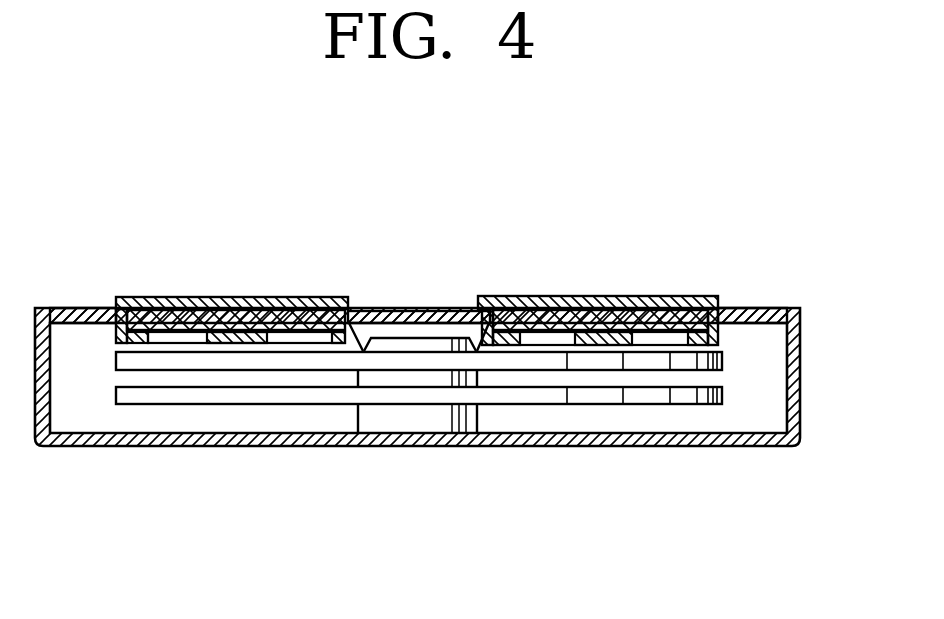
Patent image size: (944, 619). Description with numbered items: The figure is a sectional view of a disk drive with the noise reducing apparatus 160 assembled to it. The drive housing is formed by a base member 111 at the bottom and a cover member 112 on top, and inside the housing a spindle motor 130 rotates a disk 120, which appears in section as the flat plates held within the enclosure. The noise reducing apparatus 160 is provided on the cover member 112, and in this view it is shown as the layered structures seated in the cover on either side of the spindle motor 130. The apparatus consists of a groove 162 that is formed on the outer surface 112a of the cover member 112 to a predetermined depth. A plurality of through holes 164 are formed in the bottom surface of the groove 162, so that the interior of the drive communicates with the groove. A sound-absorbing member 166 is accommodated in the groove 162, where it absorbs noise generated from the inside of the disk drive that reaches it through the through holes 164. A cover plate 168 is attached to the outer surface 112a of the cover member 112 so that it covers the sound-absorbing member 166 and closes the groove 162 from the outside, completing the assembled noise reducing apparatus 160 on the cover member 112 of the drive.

The base member 111 is at (773, 447).
The cover member 112 is at (427, 289).
The outer surface 112a is at (451, 308).
The disk 120 is at (212, 398).
The spindle motor 130 is at (422, 431).
The noise reducing apparatus 160 is at (417, 255).
The groove 162 is at (138, 297).
The through holes 164 is at (246, 280).
The sound-absorbing member 166 is at (289, 297).
The cover plate 168 is at (340, 297).